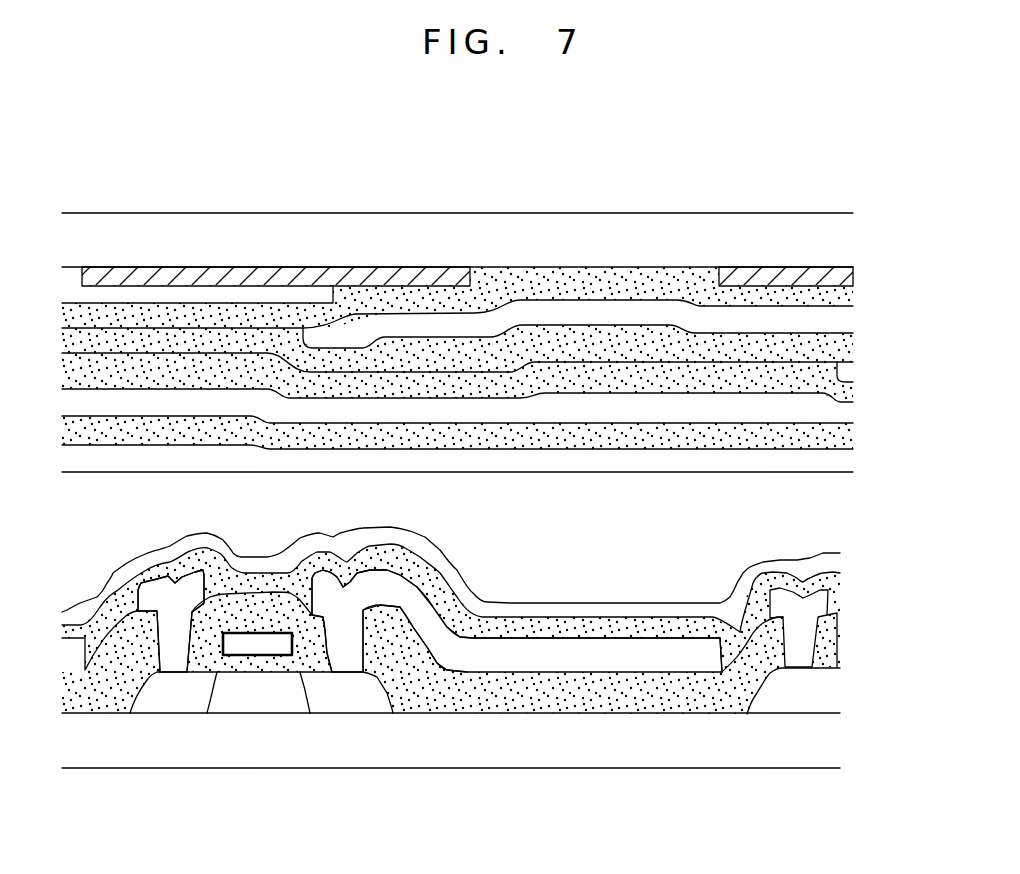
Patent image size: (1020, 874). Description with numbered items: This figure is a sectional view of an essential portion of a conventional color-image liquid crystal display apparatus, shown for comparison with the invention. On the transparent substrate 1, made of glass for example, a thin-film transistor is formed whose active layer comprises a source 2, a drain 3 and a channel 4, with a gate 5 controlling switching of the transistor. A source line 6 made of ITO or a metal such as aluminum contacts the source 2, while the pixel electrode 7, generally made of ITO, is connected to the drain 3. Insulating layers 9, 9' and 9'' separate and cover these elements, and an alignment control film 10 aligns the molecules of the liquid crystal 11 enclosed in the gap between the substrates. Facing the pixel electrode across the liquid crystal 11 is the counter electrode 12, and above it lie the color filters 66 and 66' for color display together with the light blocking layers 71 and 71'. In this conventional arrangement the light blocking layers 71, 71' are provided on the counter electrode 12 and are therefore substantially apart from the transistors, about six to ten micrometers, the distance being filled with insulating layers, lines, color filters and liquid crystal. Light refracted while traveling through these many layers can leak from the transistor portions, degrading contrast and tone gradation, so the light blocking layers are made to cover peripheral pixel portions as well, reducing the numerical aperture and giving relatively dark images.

The transparent substrate 1 is at (832, 743).
The source 2 is at (148, 705).
The drain 3 is at (327, 705).
The channel 4 is at (232, 702).
The gate 5 is at (272, 647).
The source line 6 is at (173, 655).
The pixel electrode 7 is at (483, 660).
The insulating layer 9 is at (451, 685).
The insulating layer 9' is at (866, 597).
The insulating layer 9'' is at (485, 376).
The alignment control film 10 is at (835, 463).
The liquid crystal 11 is at (820, 528).
The counter electrode 12 is at (845, 413).
The color filter 66 is at (182, 240).
The color filter 66' is at (457, 240).
The light blocking layer 71 is at (276, 219).
The light blocking layer 71' is at (786, 219).